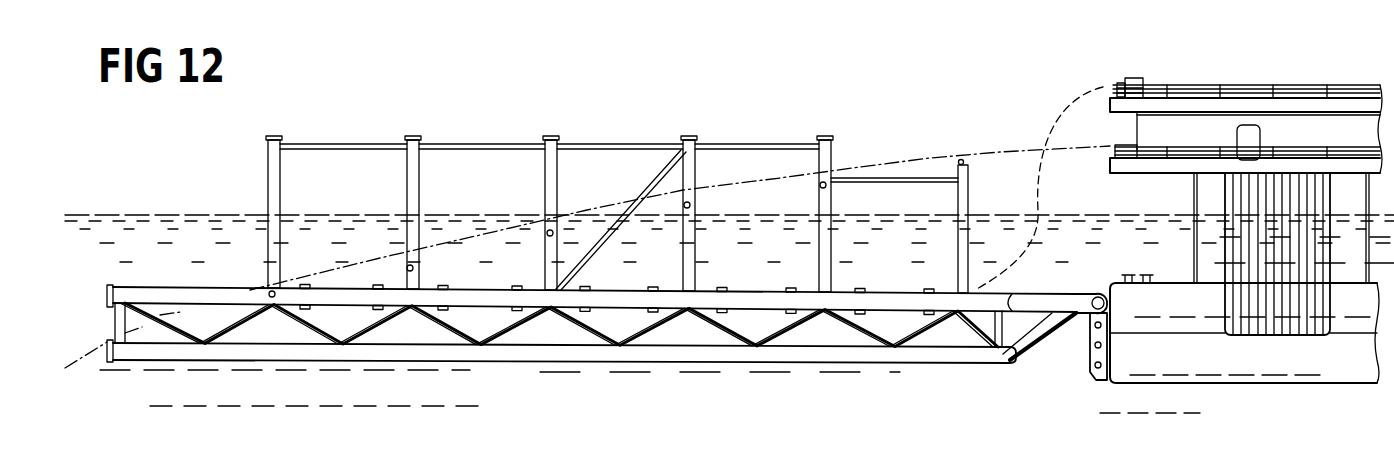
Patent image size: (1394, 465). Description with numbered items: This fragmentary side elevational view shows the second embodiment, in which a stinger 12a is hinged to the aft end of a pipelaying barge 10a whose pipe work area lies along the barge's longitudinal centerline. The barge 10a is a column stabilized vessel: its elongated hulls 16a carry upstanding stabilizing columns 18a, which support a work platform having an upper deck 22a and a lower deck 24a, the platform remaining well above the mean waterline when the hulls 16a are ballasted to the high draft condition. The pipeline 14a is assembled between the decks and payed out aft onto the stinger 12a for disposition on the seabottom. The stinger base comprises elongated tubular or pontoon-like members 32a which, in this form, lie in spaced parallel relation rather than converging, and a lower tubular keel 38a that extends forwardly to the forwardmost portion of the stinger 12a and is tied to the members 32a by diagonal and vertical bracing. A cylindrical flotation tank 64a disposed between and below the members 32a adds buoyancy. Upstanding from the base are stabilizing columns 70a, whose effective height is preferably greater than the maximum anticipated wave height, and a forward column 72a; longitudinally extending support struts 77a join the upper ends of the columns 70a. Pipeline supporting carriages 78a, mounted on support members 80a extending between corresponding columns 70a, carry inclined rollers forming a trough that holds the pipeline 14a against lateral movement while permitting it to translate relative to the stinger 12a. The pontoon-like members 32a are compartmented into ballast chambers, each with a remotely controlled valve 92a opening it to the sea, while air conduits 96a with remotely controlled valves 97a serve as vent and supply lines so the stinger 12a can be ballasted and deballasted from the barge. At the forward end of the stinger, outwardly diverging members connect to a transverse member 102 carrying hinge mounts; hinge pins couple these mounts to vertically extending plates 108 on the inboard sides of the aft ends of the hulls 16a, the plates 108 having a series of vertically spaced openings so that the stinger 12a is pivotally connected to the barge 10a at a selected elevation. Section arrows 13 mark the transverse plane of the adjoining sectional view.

The pipelaying barge 10a is at (1333, 40).
The stinger 12a is at (628, 106).
The section line 13 is at (72, 222).
The pipeline 14a is at (970, 153).
The hulls 16a is at (1267, 370).
The stabilizing columns 18a is at (1200, 195).
The upper deck 22a is at (1112, 83).
The lower deck 24a is at (1115, 145).
The elongated tubular or pontoon-like members 32a is at (212, 288).
The keel 38a is at (955, 353).
The cylindrical flotation tank 64a is at (940, 335).
The stabilizing columns 70a is at (268, 163).
The forward column 72a is at (968, 190).
The longitudinally extending support struts 77a is at (476, 143).
The pipeline supporting carriages 78a is at (695, 204).
The support members 80a is at (826, 185).
The remotely controlled valve 92a is at (643, 313).
The conduits 96a is at (512, 285).
The remotely controlled valves 97a is at (652, 288).
The transverse member 102 is at (1087, 295).
The vertically extending plates 108 is at (1092, 379).